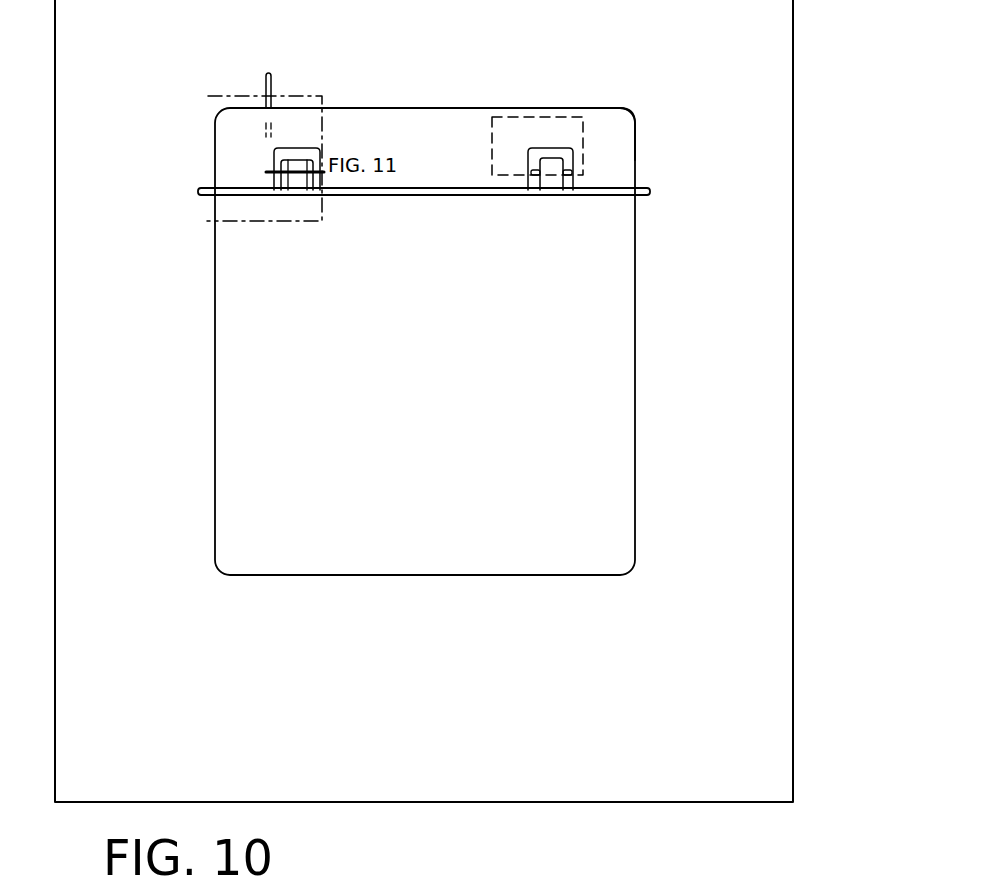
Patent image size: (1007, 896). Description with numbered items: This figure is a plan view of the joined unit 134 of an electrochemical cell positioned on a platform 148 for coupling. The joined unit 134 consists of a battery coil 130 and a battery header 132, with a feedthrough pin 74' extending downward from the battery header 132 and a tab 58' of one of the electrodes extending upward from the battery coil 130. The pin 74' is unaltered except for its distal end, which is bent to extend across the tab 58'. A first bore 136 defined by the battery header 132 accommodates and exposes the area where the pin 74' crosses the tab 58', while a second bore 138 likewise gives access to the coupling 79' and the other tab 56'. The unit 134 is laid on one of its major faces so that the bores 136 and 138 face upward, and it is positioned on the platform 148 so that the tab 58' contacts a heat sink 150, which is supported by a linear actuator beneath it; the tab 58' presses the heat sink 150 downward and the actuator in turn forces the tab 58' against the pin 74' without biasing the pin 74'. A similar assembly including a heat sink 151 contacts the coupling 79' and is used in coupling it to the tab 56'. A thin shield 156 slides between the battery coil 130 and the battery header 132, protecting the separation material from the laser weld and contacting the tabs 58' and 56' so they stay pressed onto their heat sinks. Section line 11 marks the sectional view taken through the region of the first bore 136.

The platform 148 is at (793, 250).
The battery coil 130 is at (634, 441).
The battery header 132 is at (636, 152).
The joined unit 134 is at (666, 266).
The shield 156 is at (205, 188).
The feedthrough pin 74' is at (248, 87).
The section line 11 is at (188, 96).
The first bore 136 is at (273, 158).
The heat sink 150 is at (320, 170).
The bore 138 is at (574, 183).
The tab 56' is at (535, 208).
The heat sink 151 is at (528, 172).
The coupling 79' is at (563, 99).
The tab 58' is at (236, 251).